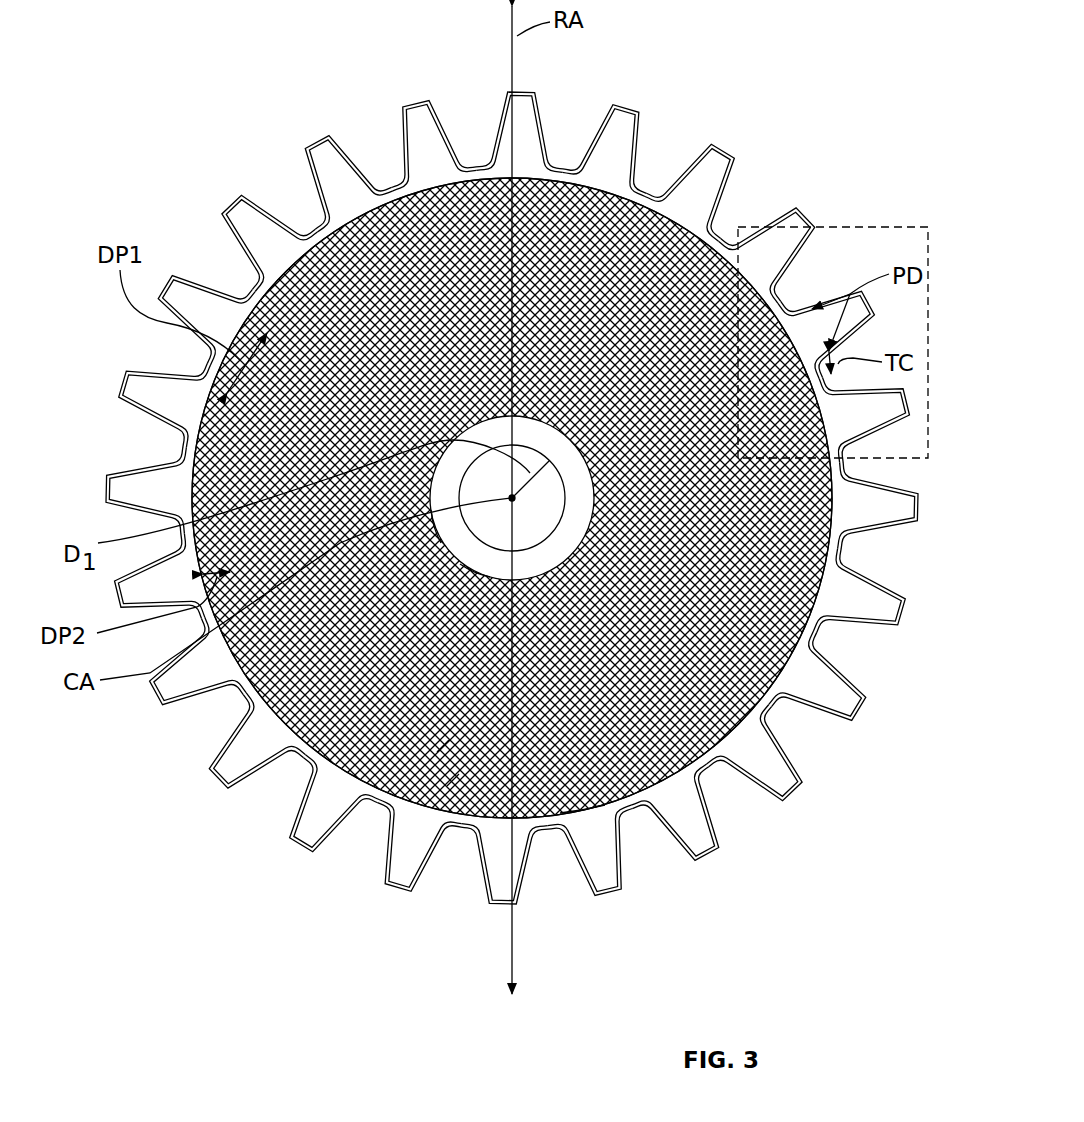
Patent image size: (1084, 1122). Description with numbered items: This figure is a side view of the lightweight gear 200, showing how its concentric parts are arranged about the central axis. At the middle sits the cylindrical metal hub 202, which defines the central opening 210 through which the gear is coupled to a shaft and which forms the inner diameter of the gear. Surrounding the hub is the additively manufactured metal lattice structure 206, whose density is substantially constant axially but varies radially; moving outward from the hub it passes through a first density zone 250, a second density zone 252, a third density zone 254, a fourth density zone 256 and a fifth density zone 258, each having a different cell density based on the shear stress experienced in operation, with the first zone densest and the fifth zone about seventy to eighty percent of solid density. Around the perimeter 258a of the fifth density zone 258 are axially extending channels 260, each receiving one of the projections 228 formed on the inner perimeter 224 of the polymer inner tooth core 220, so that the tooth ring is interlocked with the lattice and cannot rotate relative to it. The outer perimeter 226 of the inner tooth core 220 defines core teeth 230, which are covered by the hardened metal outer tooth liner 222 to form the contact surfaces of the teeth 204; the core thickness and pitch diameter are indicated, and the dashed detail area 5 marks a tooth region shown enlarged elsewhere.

The lightweight gear 200 is at (848, 50).
The hub 202 is at (832, 493).
The teeth 204 is at (878, 298).
The lattice structure 206 is at (715, 238).
The central opening 210 is at (488, 541).
The inner tooth core 220 is at (848, 665).
The outer tooth liner 222 is at (908, 542).
The inner perimeter 224 is at (606, 212).
The outer perimeter 226 is at (550, 114).
The projections 228 is at (610, 205).
The core teeth 230 is at (850, 631).
The first density zone 250 is at (433, 522).
The second density zone 252 is at (475, 567).
The third density zone 254 is at (453, 780).
The fourth density zone 256 is at (583, 808).
The fifth density zone 258 is at (747, 782).
The perimeter of the fifth density zone 258a is at (645, 790).
The channels 260 is at (745, 782).
The detail area 5 is at (868, 226).